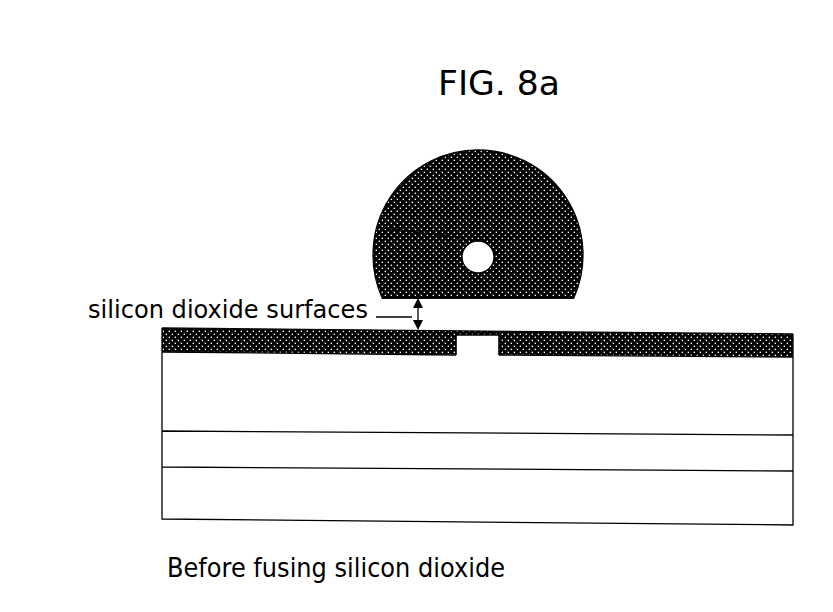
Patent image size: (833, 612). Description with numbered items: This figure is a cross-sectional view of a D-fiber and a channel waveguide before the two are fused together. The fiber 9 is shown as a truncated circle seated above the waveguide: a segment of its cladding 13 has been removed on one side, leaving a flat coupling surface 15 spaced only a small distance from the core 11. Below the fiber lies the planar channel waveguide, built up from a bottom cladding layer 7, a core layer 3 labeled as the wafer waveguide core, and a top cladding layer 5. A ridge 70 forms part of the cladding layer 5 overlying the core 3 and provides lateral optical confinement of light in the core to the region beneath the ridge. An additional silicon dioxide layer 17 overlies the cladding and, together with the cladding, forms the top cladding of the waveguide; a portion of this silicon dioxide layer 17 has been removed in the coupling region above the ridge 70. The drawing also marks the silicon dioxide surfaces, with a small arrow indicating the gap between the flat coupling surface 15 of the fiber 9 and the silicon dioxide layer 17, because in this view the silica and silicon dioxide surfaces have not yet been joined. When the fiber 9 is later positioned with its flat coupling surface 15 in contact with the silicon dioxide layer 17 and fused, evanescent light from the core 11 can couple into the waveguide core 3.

The core layer 3 is at (162, 442).
The cladding layer 5 is at (162, 390).
The cladding layer 7 is at (162, 495).
The fiber 9 is at (515, 208).
The core 11 is at (376, 227).
The cladding 13 is at (523, 177).
The flat coupling surface 15 is at (573, 298).
The silicon dioxide layer 17 is at (446, 357).
The ridge 70 is at (477, 343).